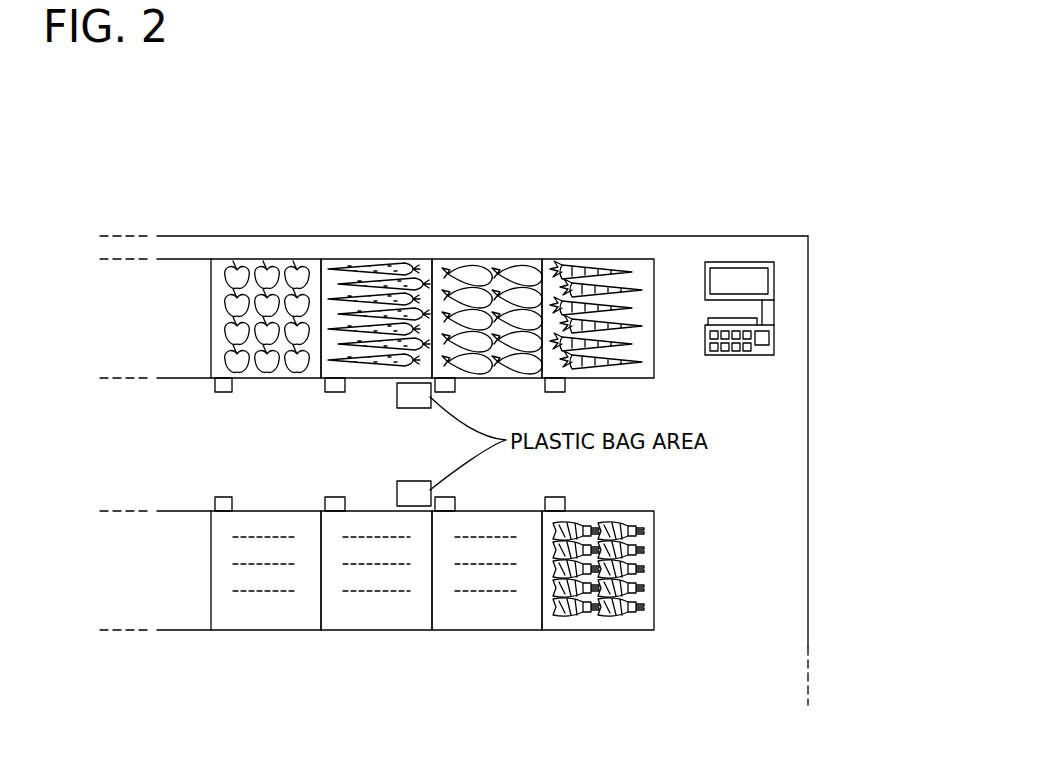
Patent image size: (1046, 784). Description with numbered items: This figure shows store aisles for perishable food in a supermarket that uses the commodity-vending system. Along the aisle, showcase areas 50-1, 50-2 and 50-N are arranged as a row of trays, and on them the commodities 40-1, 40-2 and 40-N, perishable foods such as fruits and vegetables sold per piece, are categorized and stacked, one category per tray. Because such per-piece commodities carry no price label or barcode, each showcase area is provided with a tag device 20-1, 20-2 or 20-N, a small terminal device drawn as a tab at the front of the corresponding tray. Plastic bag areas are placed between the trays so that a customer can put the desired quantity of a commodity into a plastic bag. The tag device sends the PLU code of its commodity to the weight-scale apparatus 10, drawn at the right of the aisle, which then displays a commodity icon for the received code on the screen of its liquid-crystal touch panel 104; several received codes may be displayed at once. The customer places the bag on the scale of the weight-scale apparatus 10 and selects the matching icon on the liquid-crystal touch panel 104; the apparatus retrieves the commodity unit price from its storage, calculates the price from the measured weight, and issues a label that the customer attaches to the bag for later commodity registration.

The weight-scale apparatus 10 is at (796, 263).
The liquid-crystal touch panel 104 is at (733, 270).
The tag device 20-1 is at (215, 392).
The tag device 20-2 is at (333, 392).
The tag device 20-N is at (565, 503).
The commodity 40-1 is at (226, 308).
The commodity 40-2 is at (343, 268).
The commodity 40-N is at (650, 585).
The showcase area 50-1 is at (246, 259).
The showcase area 50-2 is at (398, 259).
The showcase area 50-N is at (600, 630).